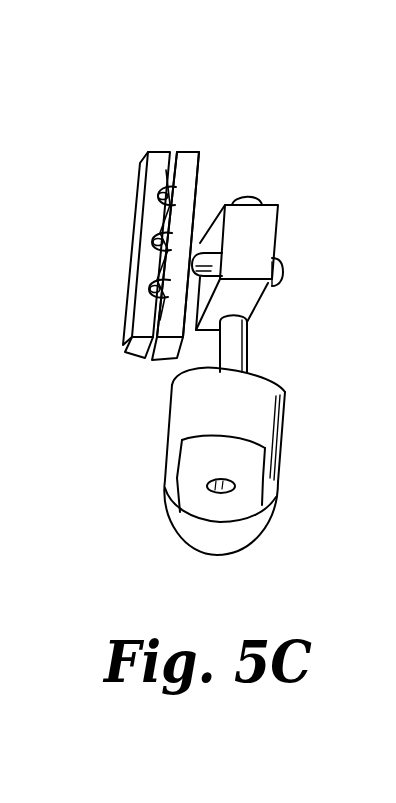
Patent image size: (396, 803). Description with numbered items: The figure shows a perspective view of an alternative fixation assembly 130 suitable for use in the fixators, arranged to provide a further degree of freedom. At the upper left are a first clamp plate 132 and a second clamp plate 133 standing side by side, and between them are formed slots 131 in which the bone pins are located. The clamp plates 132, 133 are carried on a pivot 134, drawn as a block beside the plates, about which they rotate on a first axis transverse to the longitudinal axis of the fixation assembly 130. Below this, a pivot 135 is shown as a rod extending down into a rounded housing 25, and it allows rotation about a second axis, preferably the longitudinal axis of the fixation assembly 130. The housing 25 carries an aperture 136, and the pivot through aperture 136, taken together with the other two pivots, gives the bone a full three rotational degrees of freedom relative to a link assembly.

The fixation assembly 130 is at (173, 138).
The slots 131 is at (163, 196).
The first clamp plate 132 is at (140, 350).
The second clamp plate 133 is at (188, 164).
The pivot 134 is at (207, 256).
The pivot 135 is at (230, 347).
The aperture 136 is at (233, 484).
The housing 25 is at (195, 527).